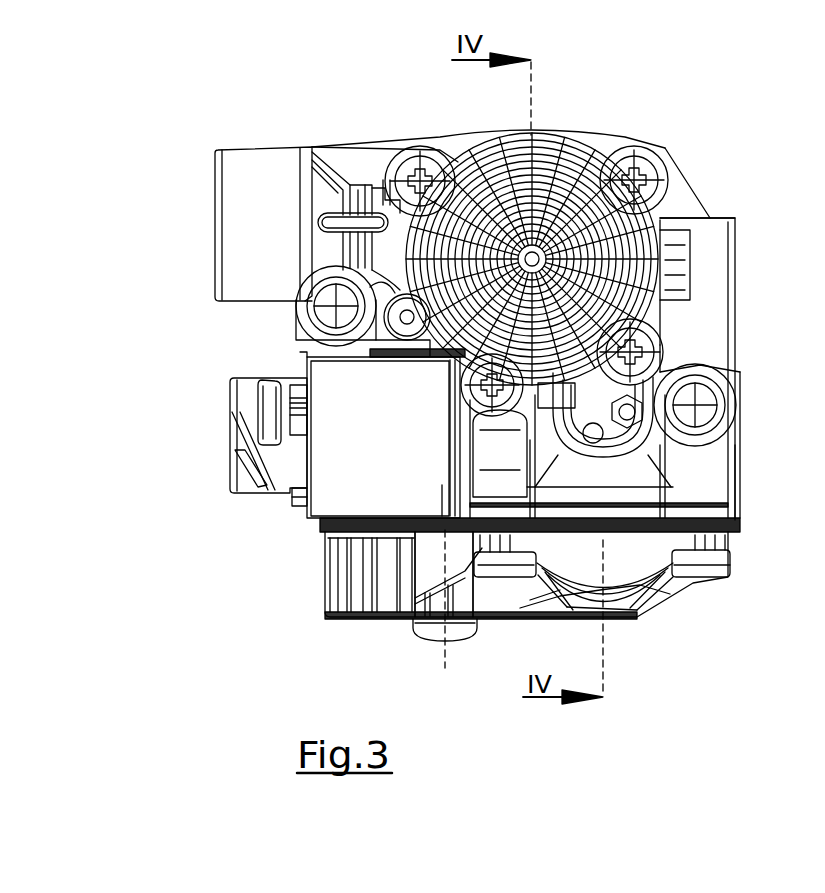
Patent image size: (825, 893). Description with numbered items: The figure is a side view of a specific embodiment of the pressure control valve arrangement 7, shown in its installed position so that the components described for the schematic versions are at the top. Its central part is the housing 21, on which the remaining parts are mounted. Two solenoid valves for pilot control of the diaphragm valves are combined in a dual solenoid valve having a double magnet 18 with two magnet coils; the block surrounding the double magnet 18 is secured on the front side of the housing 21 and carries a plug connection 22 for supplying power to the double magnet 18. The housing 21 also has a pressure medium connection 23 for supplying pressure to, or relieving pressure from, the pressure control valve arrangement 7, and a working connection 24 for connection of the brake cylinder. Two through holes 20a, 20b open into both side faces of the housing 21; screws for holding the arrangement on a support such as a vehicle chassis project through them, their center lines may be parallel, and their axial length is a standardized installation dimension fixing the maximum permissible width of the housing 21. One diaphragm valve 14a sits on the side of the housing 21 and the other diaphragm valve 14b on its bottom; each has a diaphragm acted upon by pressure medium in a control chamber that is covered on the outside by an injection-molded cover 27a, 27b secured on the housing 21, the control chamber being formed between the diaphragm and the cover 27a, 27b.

The pressure control valve arrangement 7 is at (678, 92).
The diaphragm valve 14a is at (694, 194).
The diaphragm valve 14b is at (343, 627).
The double magnet 18 is at (328, 500).
The through hole 20a is at (300, 292).
The through hole 20b is at (712, 397).
The housing 21 is at (719, 478).
The electrical connector 22 is at (268, 455).
The pressure medium connection 23 is at (232, 199).
The working connection 24 is at (716, 247).
The cover 27a is at (458, 139).
The cover 27b is at (670, 594).